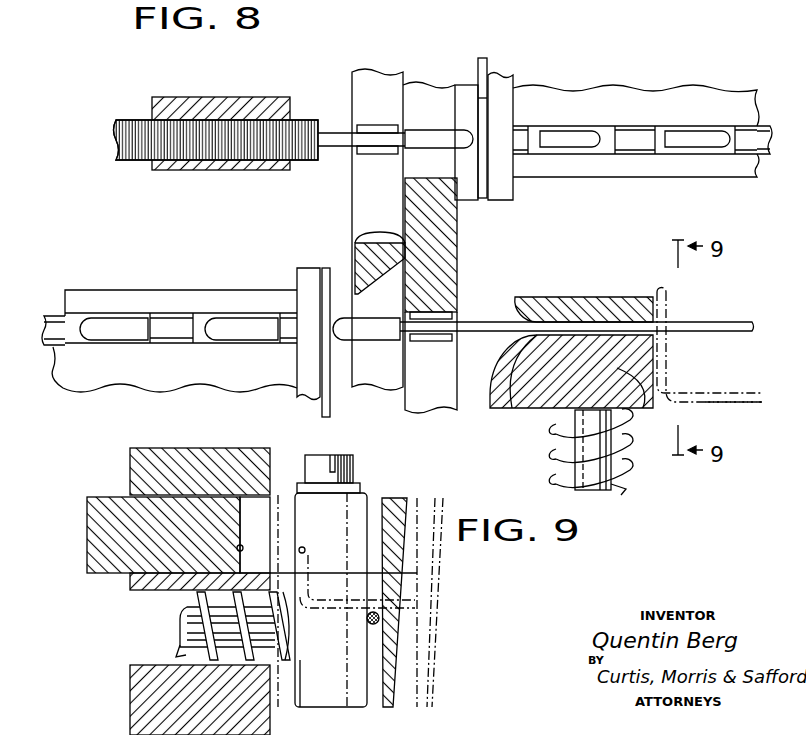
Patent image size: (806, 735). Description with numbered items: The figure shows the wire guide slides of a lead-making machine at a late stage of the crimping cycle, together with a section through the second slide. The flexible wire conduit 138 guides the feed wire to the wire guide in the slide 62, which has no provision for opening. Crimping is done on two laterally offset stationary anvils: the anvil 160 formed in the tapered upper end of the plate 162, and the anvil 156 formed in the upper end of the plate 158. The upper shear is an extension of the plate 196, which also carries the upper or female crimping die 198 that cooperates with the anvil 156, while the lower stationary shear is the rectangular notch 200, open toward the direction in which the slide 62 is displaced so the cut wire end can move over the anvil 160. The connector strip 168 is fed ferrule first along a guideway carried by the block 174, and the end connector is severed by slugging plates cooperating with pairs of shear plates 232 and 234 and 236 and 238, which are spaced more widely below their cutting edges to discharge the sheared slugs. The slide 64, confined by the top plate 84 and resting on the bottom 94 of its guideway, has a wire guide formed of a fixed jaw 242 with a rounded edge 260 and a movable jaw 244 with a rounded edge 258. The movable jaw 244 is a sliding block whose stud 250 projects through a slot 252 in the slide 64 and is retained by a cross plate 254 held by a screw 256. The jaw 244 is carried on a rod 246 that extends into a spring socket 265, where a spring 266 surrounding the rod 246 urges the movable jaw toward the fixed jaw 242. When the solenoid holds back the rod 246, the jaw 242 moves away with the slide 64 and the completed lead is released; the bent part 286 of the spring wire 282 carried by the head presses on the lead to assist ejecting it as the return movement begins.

In FIG. 8, the slide 62 is at (190, 105).
In FIG. 8, the flexible wire conduit 138 is at (140, 133).
In FIG. 8, the anvil 160 is at (352, 160).
In FIG. 8, the plate 162 is at (366, 78).
In FIG. 8, the rectangular notch 200 is at (362, 242).
In FIG. 8, the plate 196 is at (432, 221).
In FIG. 8, the plate 158 is at (433, 395).
In FIG. 8, the upper or female crimping die 198 is at (446, 306).
In FIG. 8, the anvil 156 is at (452, 341).
In FIG. 8, the shear plate 238 is at (468, 80).
In FIG. 8, the shear plate 236 is at (500, 96).
In FIG. 8, the block 174 is at (722, 170).
In FIG. 8, the connector strip 168 is at (760, 125).
In FIG. 8, the shear plate 232 is at (299, 397).
In FIG. 8, the shear plate 234 is at (344, 398).
In FIG. 8, the rounded edge 260 is at (530, 300).
In FIG. 8, the fixed jaw 242 is at (608, 300).
In FIG. 9, the fixed jaw 242 is at (405, 648).
In FIG. 8, the rounded edge 258 is at (511, 408).
In FIG. 8, the movable jaw 244 is at (640, 398).
In FIG. 9, the movable jaw 244 is at (308, 683).
In FIG. 8, the rod 246 is at (585, 450).
In FIG. 9, the rod 246 is at (185, 620).
In FIG. 8, the spring 266 is at (620, 460).
In FIG. 9, the spring 266 is at (178, 652).
In FIG. 8, the bent part of spring wire 286 is at (670, 302).
In FIG. 9, the bent part of spring wire 286 is at (418, 600).
In FIG. 8, the spring wire 282 is at (716, 392).
In FIG. 9, the spring wire 282 is at (306, 552).
In FIG. 9, the top plate 84 is at (152, 466).
In FIG. 9, the slide 64 is at (105, 535).
In FIG. 9, the stud 250 is at (298, 505).
In FIG. 9, the slot 252 is at (237, 548).
In FIG. 9, the spring socket 265 is at (150, 593).
In FIG. 9, the bottom 94 is at (150, 672).
In FIG. 9, the screw 256 is at (345, 458).
In FIG. 9, the cross plate 254 is at (352, 490).